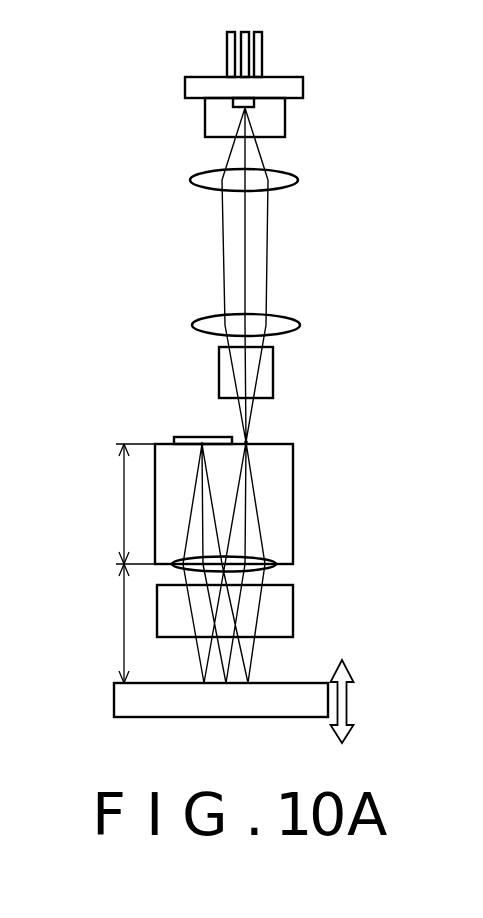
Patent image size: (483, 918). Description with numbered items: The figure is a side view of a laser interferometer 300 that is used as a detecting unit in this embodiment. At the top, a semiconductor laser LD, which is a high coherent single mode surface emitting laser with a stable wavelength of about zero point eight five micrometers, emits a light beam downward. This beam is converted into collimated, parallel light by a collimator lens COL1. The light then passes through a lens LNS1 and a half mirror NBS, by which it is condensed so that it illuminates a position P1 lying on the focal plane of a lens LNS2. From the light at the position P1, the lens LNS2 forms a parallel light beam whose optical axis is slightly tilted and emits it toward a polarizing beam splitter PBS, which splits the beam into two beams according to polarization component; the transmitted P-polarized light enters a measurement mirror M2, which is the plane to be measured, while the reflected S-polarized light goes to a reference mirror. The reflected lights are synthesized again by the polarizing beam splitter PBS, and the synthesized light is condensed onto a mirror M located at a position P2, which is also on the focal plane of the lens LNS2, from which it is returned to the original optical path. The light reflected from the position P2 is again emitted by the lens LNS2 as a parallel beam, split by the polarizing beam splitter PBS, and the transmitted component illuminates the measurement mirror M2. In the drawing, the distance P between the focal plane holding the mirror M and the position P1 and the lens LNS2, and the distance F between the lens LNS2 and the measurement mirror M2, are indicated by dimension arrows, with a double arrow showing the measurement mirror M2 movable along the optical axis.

The laser interferometer 300 is at (474, 64).
The semiconductor laser LD is at (285, 117).
The collimator lens COL1 is at (202, 171).
The lens LNS1 is at (193, 325).
The half mirror NBS is at (219, 368).
The mirror M is at (181, 437).
The position P1 is at (247, 440).
The position P2 is at (202, 446).
The distance P is at (137, 504).
The lens LNS2 is at (277, 566).
The focal length F is at (116, 623).
The polarizing beam splitter PBS is at (157, 620).
The measurement mirror M2 is at (310, 683).